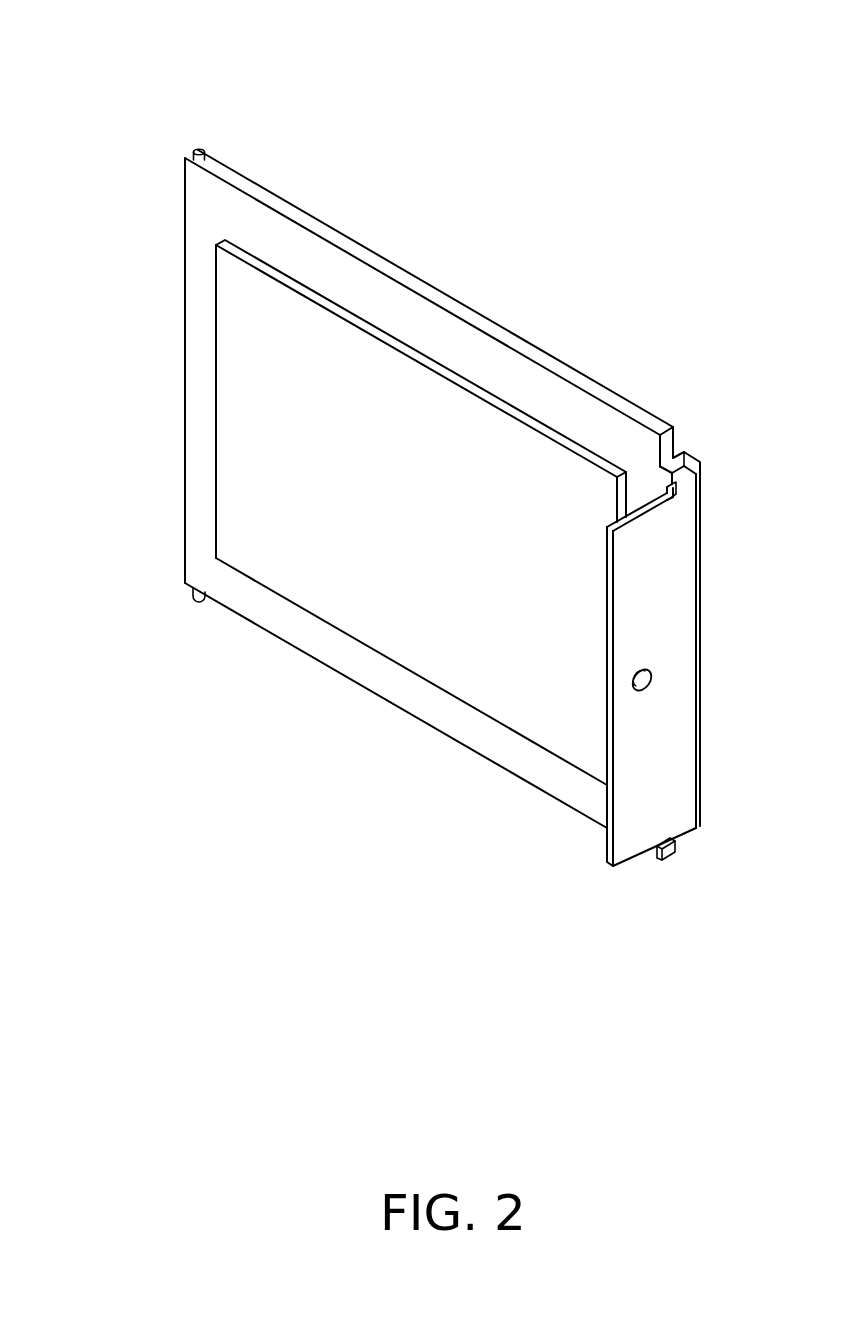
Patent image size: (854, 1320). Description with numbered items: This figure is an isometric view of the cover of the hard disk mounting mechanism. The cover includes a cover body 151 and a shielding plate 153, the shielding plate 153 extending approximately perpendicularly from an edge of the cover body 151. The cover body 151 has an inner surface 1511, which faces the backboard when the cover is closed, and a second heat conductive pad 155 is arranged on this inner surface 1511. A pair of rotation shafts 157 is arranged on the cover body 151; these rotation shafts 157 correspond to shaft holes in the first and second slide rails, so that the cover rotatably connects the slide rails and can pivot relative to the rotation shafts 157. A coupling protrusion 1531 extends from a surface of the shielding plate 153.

The cover body 151 is at (372, 258).
The inner surface 1511 is at (198, 220).
The shielding plate 153 is at (645, 793).
The coupling protrusion 1531 is at (644, 692).
The second heat conductive pad 155 is at (421, 401).
The rotation shafts 157 is at (207, 158).